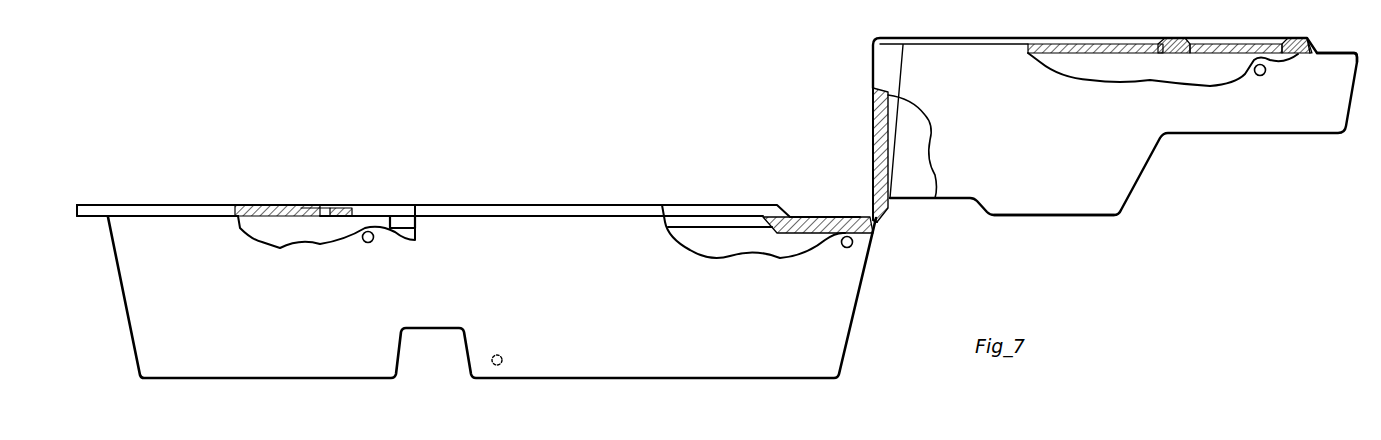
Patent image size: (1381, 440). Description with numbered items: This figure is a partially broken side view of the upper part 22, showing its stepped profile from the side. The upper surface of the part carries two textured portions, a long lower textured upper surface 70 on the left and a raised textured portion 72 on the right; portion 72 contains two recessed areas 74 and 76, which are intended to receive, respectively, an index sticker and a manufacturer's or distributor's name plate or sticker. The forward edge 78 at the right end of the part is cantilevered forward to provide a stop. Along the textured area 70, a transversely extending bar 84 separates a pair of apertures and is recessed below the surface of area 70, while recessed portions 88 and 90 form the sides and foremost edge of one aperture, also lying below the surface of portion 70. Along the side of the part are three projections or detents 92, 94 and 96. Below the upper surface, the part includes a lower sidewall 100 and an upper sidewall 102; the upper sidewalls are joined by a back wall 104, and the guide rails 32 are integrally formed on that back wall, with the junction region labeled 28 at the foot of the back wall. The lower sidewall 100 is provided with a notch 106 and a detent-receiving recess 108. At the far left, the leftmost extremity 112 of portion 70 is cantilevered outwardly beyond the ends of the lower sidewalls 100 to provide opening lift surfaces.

The upper part 22 is at (343, 382).
The wall joint 28 is at (885, 222).
The guide rails 32 is at (918, 120).
The textured upper surface portion 70 is at (167, 203).
The textured upper surface portion 72 is at (958, 36).
The recessed area 74 is at (1093, 46).
The recessed area 76 is at (1238, 44).
The forward edge 78 is at (1336, 52).
The transversely extending bar 84 is at (339, 207).
The recessed portion 88 is at (405, 216).
The recessed portion 90 is at (818, 212).
The projection or detent 92 is at (1262, 76).
The projection or detent 94 is at (843, 247).
The projection or detent 96 is at (364, 243).
The lower sidewalls 100 is at (664, 360).
The upper sidewalls 102 is at (1097, 214).
The back wall 104 is at (872, 150).
The notches 106 is at (466, 356).
The detent-receiving recesses 108 is at (500, 352).
The leftmost extremity 112 is at (90, 220).